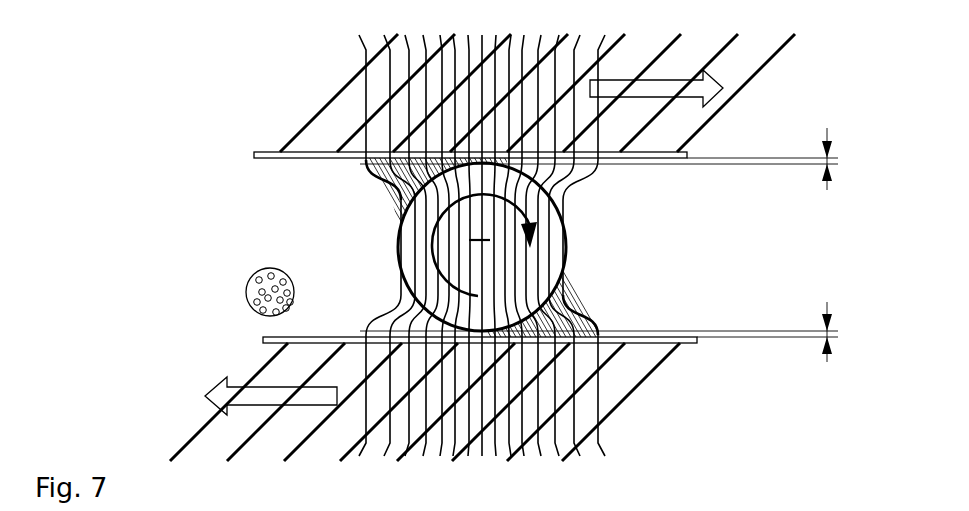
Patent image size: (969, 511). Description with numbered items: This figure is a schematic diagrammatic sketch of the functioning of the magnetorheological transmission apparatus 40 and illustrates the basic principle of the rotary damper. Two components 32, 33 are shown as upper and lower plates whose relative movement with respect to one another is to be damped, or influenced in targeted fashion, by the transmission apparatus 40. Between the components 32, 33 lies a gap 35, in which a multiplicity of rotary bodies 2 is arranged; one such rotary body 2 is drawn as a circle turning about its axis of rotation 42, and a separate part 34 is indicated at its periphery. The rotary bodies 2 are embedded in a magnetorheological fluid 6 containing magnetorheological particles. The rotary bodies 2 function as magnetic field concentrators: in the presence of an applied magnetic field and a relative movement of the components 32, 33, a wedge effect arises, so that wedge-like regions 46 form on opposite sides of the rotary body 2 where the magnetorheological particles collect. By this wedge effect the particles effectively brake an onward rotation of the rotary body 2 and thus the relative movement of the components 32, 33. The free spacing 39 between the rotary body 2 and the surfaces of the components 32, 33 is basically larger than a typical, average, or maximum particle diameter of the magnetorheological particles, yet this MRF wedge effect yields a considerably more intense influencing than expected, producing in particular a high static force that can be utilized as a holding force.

The magnetorheological transmission apparatus 40 is at (212, 98).
The gap 35 is at (262, 205).
The wedge-like region 46 is at (392, 178).
The rotary body 2 is at (405, 258).
The magnetorheological fluid 6 is at (247, 290).
The component 33 is at (765, 43).
The component 32 is at (652, 377).
The free spacing 39 is at (832, 160).
The separate part 34 is at (565, 233).
The axis of rotation 42 is at (492, 245).